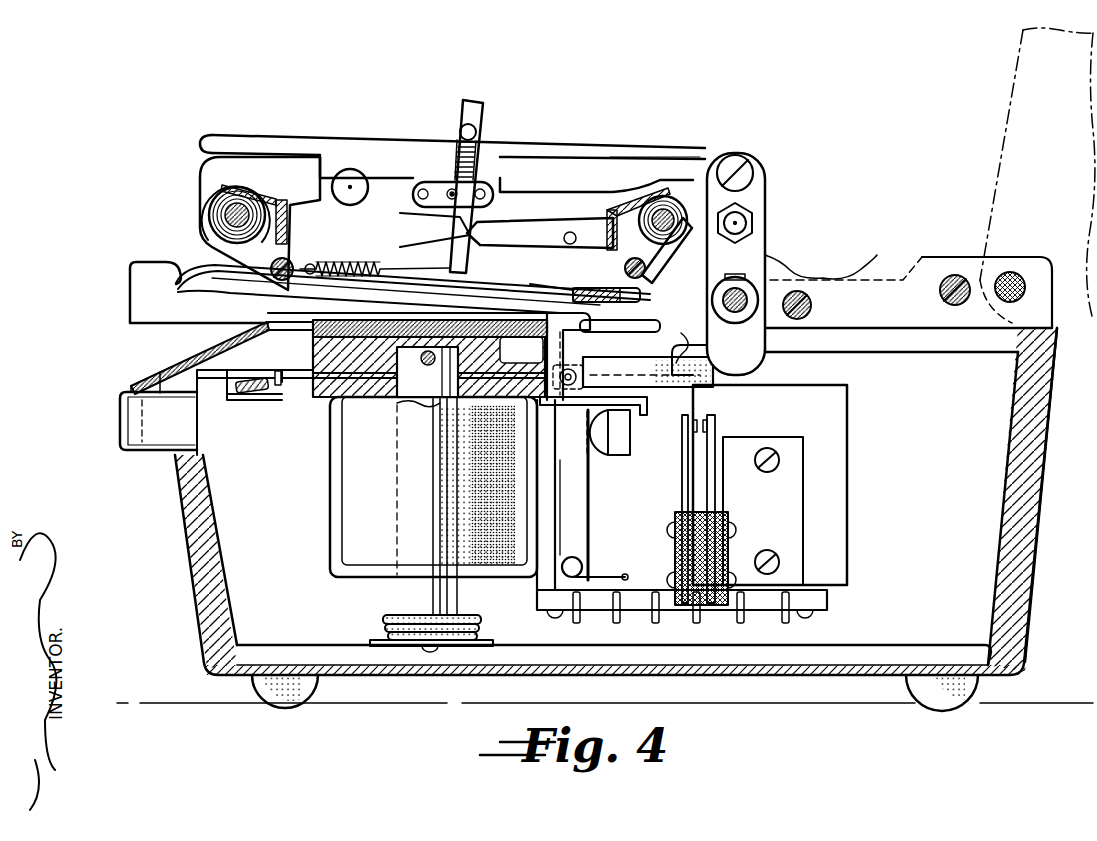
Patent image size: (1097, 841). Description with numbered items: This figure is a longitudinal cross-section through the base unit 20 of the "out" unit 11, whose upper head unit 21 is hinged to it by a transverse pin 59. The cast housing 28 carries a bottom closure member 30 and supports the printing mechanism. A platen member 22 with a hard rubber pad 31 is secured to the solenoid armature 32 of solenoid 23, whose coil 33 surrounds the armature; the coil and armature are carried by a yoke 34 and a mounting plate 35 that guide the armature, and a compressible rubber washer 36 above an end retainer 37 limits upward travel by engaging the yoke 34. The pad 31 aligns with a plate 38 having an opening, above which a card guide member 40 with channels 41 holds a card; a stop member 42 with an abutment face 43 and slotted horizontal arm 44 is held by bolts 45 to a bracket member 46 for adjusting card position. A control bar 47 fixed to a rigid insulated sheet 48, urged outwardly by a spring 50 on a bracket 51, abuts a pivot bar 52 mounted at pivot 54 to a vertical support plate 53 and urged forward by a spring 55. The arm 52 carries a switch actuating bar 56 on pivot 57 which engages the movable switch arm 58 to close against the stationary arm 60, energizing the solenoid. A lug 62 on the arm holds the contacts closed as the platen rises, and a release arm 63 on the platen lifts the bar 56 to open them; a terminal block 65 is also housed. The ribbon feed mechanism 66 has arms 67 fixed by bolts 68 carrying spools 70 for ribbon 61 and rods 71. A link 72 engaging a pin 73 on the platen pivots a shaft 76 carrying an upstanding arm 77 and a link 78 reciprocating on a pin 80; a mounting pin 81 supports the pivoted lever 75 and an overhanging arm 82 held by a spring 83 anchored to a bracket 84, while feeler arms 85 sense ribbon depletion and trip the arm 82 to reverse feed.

The "out" unit 11 is at (183, 602).
The base unit 20 is at (632, 519).
The upper head unit 21 is at (1046, 62).
The platen member 22 is at (320, 366).
The solenoid 23 is at (385, 505).
The cast housing 28 is at (1020, 497).
The bottom closure member 30 is at (842, 664).
The hard rubber pad 31 is at (513, 311).
The solenoid armature 32 is at (410, 604).
The coil 33 is at (387, 550).
The yoke 34 is at (407, 507).
The mounting plate 35 is at (343, 437).
The compressible rubber washer 36 is at (478, 620).
The end retainer 37 is at (480, 646).
The plate 38 is at (163, 365).
The card guide member 40 is at (142, 268).
The channels 41 is at (155, 288).
The stop member 42 is at (641, 305).
The abutment face 43 is at (607, 289).
The horizontal arm 44 is at (657, 280).
The bolts 45 is at (636, 261).
The bracket member 46 is at (617, 314).
The control bar 47 is at (122, 450).
The rigid insulated sheet 48 is at (255, 392).
The spring 50 is at (258, 394).
The bracket 51 is at (238, 401).
The pivot bar 52 is at (582, 515).
The vertical support plate 53 is at (558, 476).
The pivot 54 is at (574, 567).
The spring 55 is at (568, 546).
The switch actuating bar 56 is at (704, 364).
The pivot 57 is at (574, 371).
The movable switch arm 58 is at (697, 400).
The transverse pin 59 is at (1015, 278).
The stationary arm 60 is at (723, 499).
The ribbon 61 is at (360, 260).
The lug 62 is at (580, 292).
The release arm 63 is at (648, 407).
The terminal block 65 is at (830, 467).
The ribbon feed mechanism 66 is at (647, 176).
The arms 67 is at (901, 281).
The bolts 68 is at (806, 300).
The spools 70 is at (213, 214).
The rods 71 is at (288, 259).
The link 72 is at (700, 340).
The pin 73 is at (545, 300).
The pivoted lever 75 is at (272, 137).
The shaft 76 is at (747, 288).
The upstanding arm 77 is at (760, 264).
The link 78 is at (578, 160).
The pin 80 is at (354, 188).
The mounting pin 81 is at (453, 188).
The overhanging arm 82 is at (476, 107).
The spring 83 is at (478, 148).
The bracket 84 is at (483, 232).
The feeler arms 85 is at (278, 208).